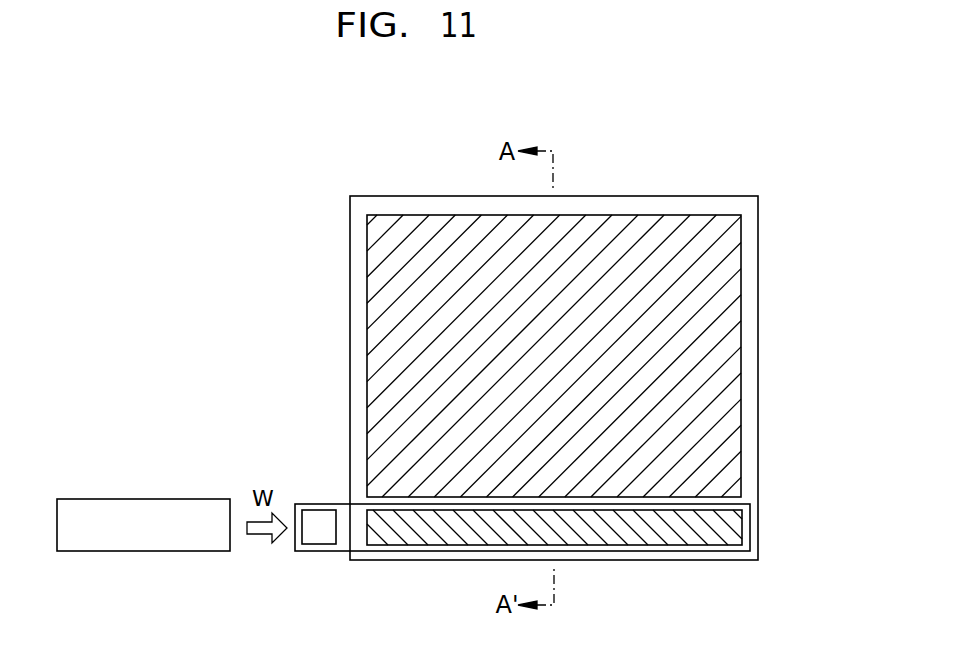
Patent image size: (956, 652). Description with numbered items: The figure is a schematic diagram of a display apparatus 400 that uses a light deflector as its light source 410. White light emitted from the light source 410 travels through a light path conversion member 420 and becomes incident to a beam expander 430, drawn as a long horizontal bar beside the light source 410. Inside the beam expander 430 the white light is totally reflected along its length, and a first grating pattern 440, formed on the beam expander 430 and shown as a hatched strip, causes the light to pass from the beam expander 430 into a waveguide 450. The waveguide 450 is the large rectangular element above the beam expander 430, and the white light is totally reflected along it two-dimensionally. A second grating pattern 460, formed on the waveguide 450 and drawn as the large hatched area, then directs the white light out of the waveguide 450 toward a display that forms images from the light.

The display apparatus 400 is at (757, 163).
The light source 410 is at (143, 551).
The light path conversion member 420 is at (318, 544).
The beam expander 430 is at (635, 551).
The first grating pattern 440 is at (442, 545).
The waveguide 450 is at (687, 197).
The second grating pattern 460 is at (627, 215).